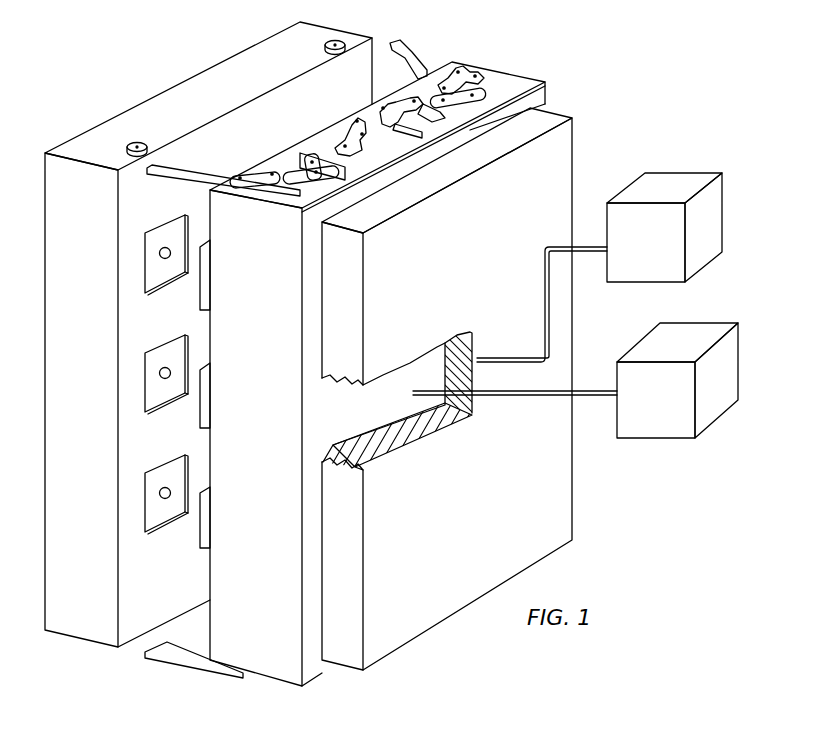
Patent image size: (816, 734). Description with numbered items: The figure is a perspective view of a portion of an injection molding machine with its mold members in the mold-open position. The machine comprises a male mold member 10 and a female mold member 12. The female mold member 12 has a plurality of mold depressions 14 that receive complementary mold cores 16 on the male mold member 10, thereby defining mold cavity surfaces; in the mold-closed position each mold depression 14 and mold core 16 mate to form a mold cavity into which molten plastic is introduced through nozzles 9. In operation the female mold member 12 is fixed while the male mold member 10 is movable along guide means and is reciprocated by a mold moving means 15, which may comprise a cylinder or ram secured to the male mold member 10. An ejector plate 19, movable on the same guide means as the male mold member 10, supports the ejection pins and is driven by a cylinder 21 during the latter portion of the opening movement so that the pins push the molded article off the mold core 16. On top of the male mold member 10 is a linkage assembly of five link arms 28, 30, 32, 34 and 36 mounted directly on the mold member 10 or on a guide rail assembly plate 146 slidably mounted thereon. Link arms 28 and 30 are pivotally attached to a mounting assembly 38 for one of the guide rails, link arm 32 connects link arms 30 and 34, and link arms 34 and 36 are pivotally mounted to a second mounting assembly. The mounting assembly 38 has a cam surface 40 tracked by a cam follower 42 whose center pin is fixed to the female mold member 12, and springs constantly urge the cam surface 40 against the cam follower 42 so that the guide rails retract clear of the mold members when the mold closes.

The nozzle 9 is at (159, 253).
The male mold member 10 is at (268, 456).
The female mold member 12 is at (228, 104).
The mold depression 14 is at (146, 287).
The mold moving means 15 is at (672, 414).
The mold core 16 is at (206, 290).
The ejector plate 19 is at (552, 122).
The cylinder 21 is at (668, 254).
The link arm 28 is at (243, 190).
The link arm 30 is at (273, 198).
The link arm 32 is at (447, 116).
The link arm 34 is at (415, 128).
The link arm 36 is at (345, 138).
The mounting assembly 38 is at (170, 178).
The cam surface 40 is at (218, 170).
The cam follower 42 is at (130, 142).
The guide rail assembly plate 146 is at (506, 84).